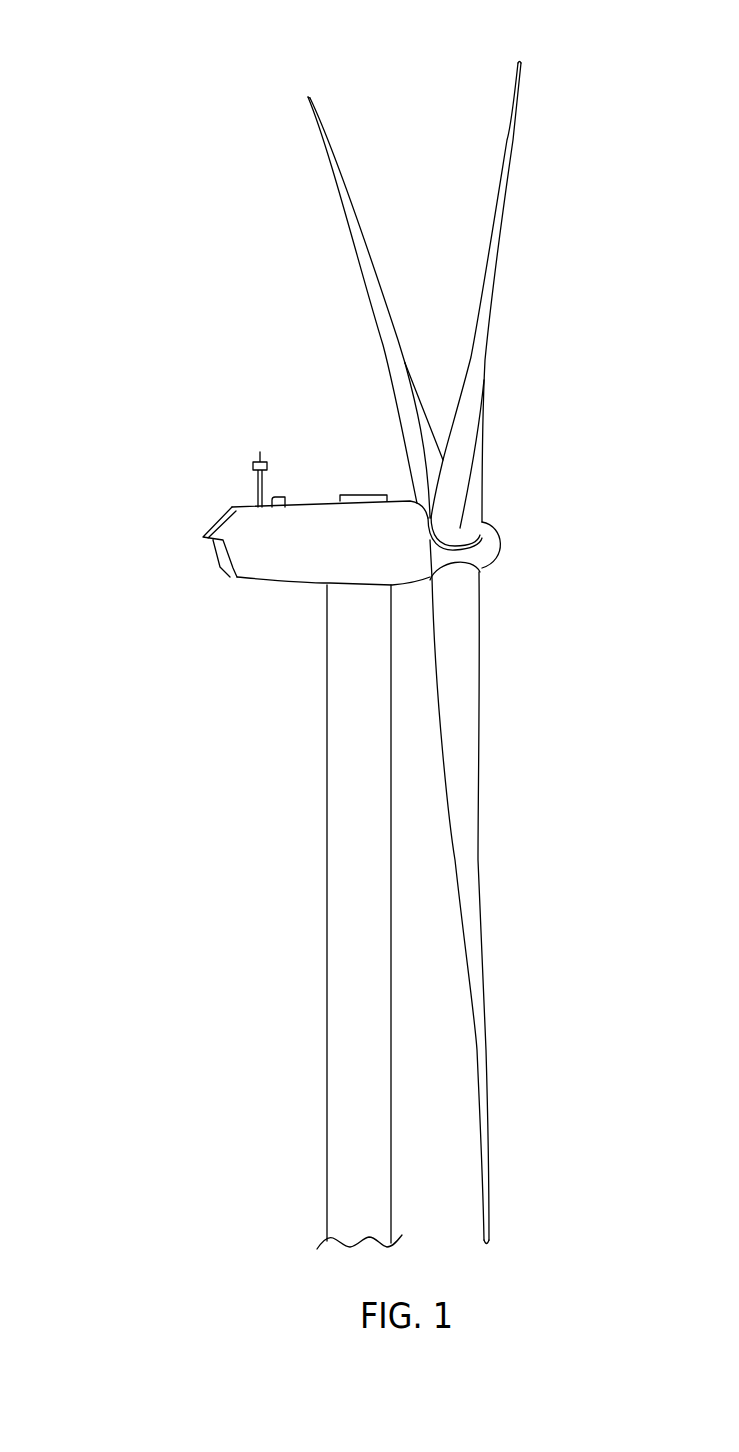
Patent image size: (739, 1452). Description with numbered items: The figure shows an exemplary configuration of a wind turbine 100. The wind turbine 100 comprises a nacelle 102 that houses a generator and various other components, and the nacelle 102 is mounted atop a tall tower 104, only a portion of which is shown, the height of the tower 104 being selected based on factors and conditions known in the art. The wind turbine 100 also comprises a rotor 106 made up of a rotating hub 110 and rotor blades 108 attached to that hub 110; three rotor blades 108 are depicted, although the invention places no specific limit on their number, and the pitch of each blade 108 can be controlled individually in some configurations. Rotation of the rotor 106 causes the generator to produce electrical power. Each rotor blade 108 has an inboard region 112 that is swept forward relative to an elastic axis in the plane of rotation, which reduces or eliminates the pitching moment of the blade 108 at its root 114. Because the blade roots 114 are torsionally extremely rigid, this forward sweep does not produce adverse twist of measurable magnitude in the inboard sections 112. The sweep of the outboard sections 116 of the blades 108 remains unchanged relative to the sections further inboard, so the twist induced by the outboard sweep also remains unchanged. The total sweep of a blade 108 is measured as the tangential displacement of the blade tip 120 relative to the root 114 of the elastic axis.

The wind turbine 100 is at (170, 310).
The nacelle 102 is at (280, 580).
The tower 104 is at (327, 863).
The rotor 106 is at (581, 336).
The rotor blade 108 is at (374, 197).
The hub 110 is at (500, 547).
The inboard region 112 is at (415, 467).
The blade root 114 is at (482, 520).
The outboard section 116 is at (343, 167).
The blade tip 120 is at (308, 97).